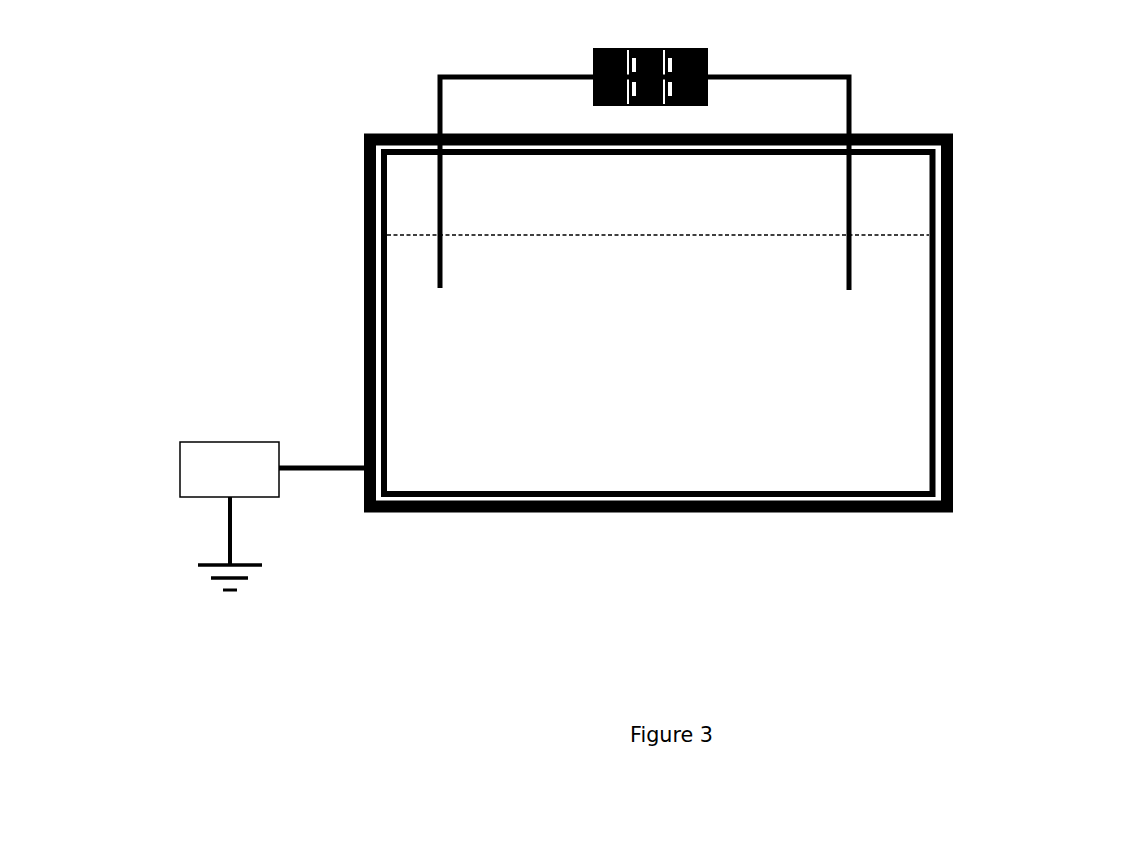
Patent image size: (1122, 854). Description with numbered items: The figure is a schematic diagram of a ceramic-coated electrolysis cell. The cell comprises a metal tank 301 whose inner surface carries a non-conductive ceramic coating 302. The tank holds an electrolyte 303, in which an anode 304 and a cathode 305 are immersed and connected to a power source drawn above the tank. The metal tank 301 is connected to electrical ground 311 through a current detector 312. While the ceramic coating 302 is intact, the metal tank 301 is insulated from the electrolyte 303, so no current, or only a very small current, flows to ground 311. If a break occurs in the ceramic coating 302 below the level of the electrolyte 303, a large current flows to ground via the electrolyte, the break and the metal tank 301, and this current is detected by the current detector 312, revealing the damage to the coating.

The metal tank 301 is at (363, 173).
The ceramic coating 302 is at (933, 420).
The electrolyte 303 is at (435, 332).
The anode 304 is at (435, 256).
The cathode 305 is at (852, 253).
The electrical ground 311 is at (223, 582).
The current detector 312 is at (193, 485).